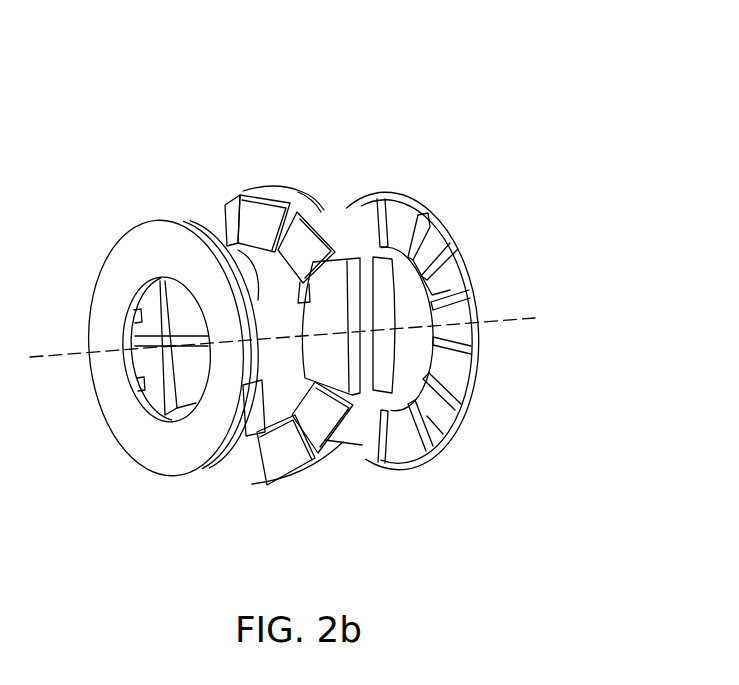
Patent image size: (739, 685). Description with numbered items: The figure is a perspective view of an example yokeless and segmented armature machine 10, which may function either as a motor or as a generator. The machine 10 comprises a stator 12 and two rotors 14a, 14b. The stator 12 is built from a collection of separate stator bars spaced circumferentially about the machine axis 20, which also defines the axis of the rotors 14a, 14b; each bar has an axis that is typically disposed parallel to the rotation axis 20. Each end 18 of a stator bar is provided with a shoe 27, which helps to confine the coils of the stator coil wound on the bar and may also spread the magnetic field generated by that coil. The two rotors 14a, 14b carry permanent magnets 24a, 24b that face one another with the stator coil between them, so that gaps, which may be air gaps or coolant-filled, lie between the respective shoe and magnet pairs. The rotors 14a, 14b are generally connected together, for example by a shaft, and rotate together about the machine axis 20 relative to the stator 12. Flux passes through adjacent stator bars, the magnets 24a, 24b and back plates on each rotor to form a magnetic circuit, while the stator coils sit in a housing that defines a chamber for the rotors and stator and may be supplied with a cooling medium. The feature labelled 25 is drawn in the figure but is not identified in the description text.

The yokeless and segmented armature machine 10 is at (239, 76).
The stator 12 is at (299, 195).
The rotor 14a is at (142, 213).
The rotor 14b is at (417, 178).
The end of stator bar 18 is at (285, 455).
The machine axis 20 is at (58, 370).
The permanent magnet 24a is at (235, 453).
The permanent magnet 24b is at (430, 422).
The ribs 25 is at (452, 282).
The shoe 27 is at (265, 218).